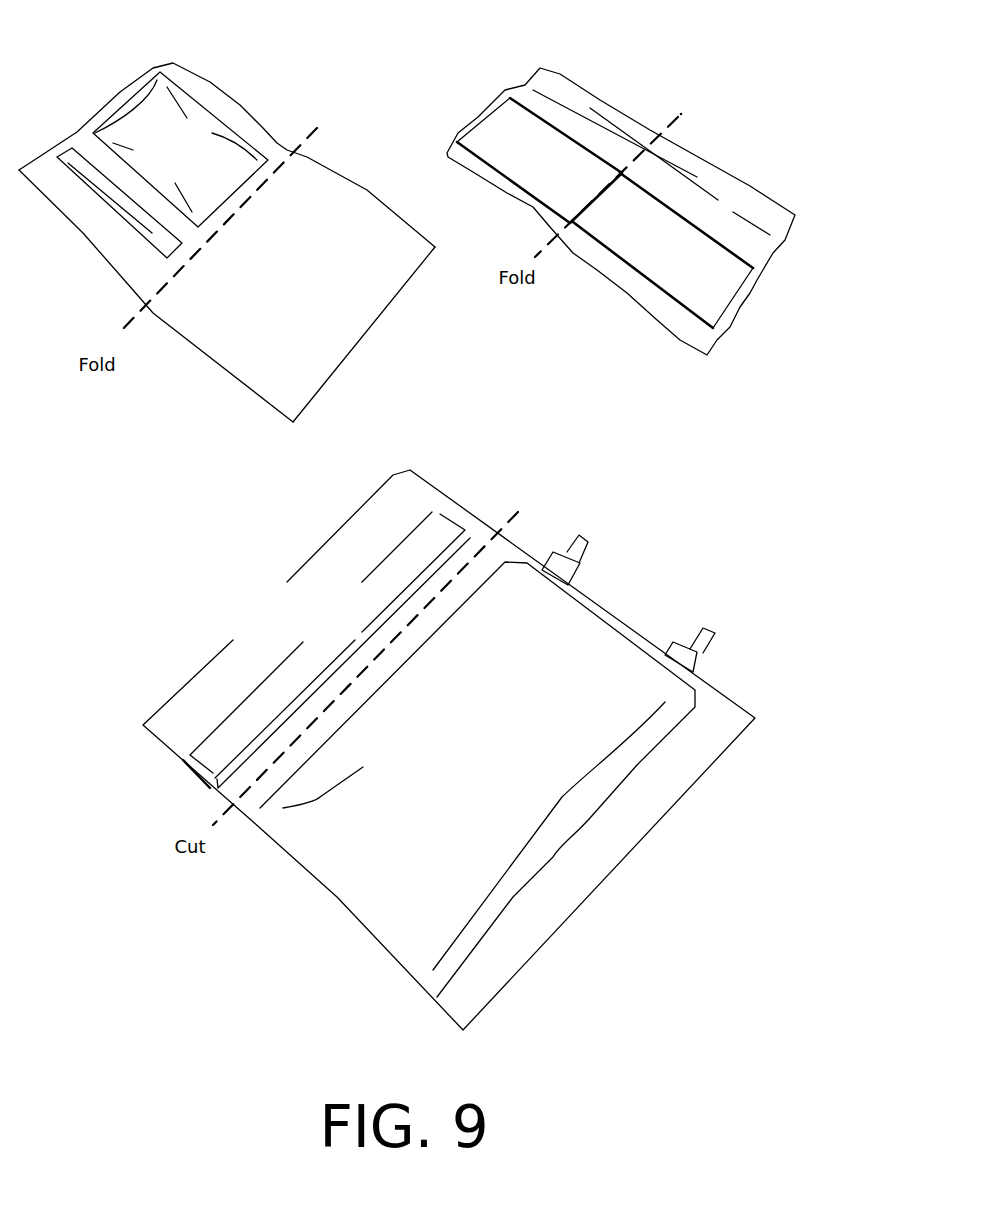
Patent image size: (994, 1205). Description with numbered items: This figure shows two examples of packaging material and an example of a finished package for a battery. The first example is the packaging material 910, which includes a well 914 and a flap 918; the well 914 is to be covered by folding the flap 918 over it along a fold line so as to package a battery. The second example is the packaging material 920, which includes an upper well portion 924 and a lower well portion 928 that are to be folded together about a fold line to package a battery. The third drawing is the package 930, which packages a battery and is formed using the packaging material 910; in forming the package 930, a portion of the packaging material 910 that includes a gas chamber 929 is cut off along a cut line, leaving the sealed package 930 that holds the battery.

The packaging material 910 is at (369, 81).
The well 914 is at (163, 172).
The flap 918 is at (271, 291).
The packaging material 920 is at (696, 97).
The upper well portion 924 is at (520, 182).
The lower well portion 928 is at (645, 266).
The gas chamber 929 is at (335, 619).
The package 930 is at (536, 747).